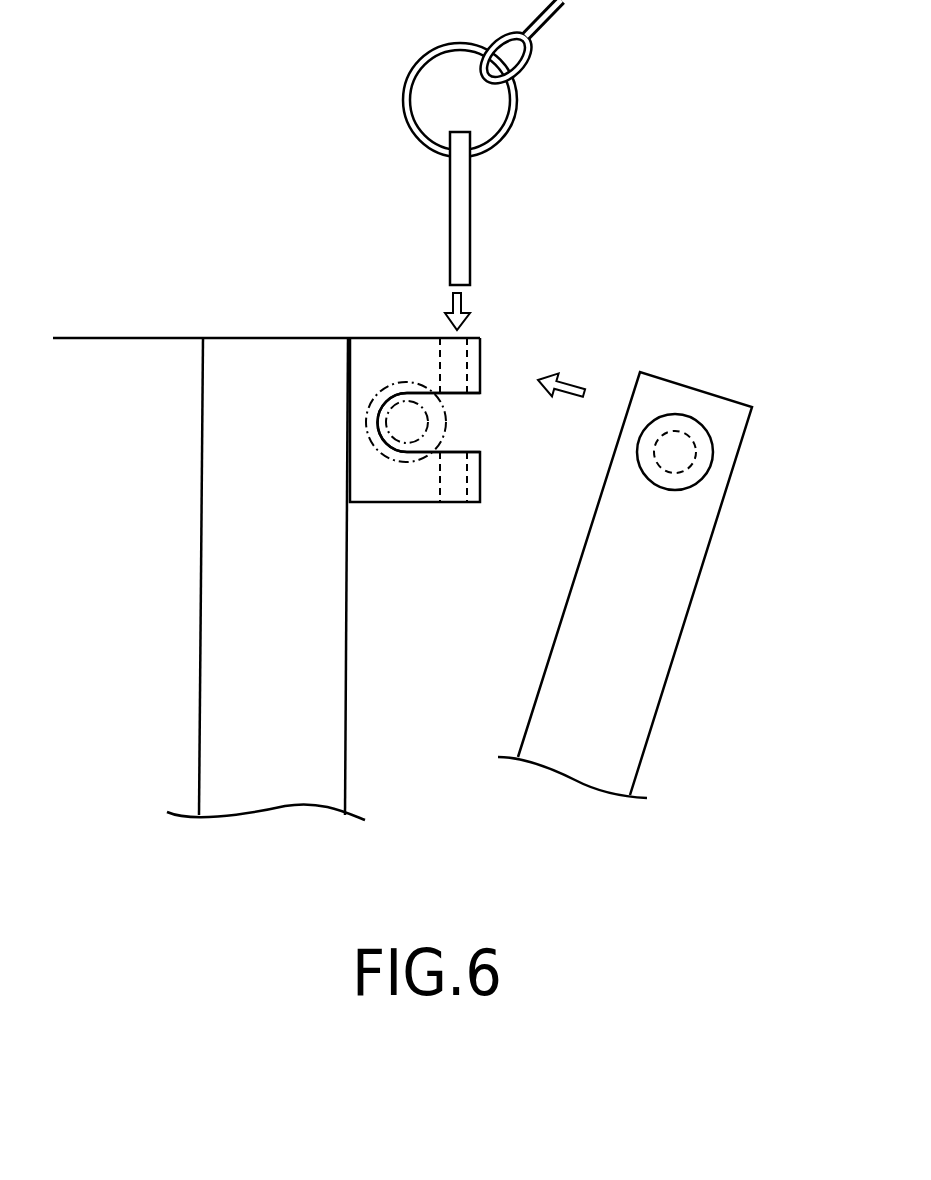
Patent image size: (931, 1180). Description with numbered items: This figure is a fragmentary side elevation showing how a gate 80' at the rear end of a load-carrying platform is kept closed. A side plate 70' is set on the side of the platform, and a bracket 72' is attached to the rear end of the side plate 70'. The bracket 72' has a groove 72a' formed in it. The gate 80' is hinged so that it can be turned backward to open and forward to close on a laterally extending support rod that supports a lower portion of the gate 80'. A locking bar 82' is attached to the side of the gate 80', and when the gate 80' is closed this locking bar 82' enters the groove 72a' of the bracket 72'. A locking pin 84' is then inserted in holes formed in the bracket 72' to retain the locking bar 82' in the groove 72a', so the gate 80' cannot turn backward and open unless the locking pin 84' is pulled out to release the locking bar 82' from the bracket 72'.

The side plate 70' is at (266, 531).
The bracket 72' is at (415, 469).
The groove 72a' is at (478, 449).
The gate 80' is at (638, 585).
The locking bar 82' is at (543, 460).
The locking pin 84' is at (498, 142).